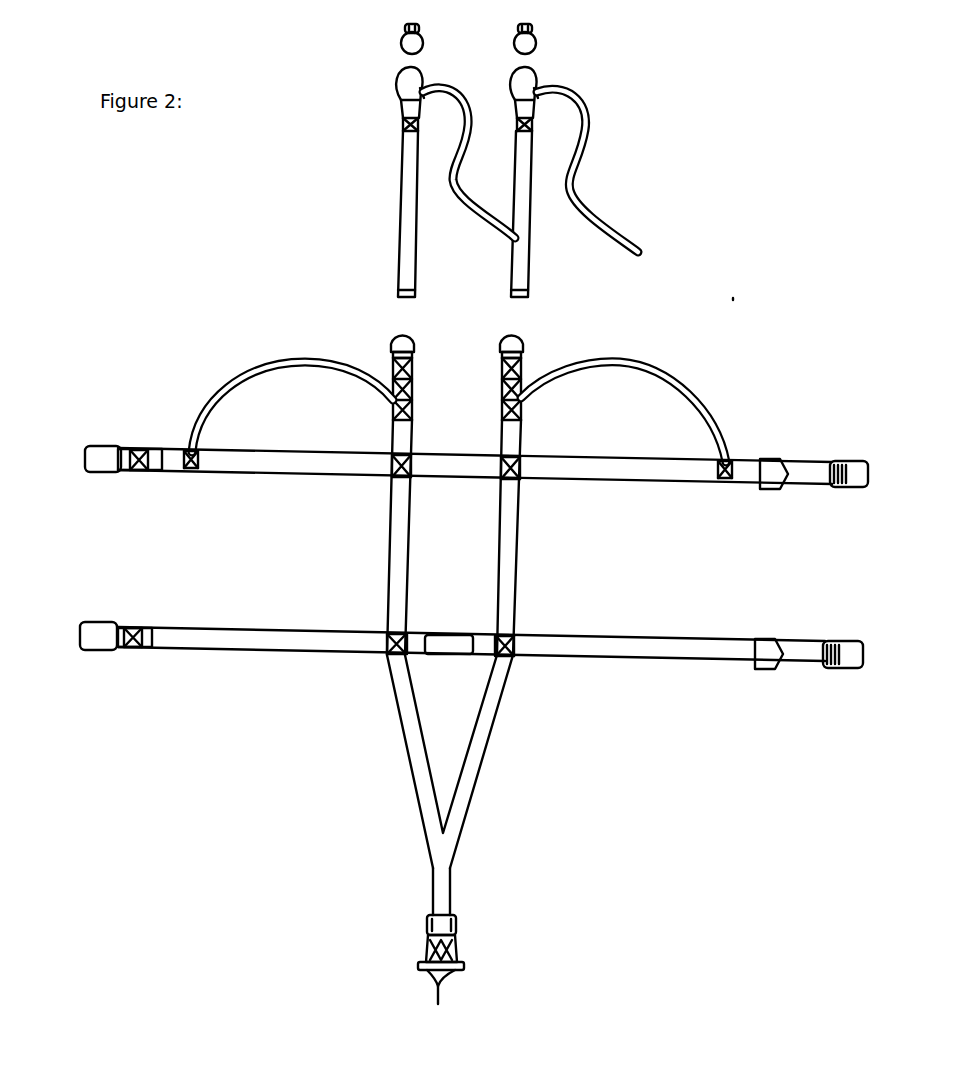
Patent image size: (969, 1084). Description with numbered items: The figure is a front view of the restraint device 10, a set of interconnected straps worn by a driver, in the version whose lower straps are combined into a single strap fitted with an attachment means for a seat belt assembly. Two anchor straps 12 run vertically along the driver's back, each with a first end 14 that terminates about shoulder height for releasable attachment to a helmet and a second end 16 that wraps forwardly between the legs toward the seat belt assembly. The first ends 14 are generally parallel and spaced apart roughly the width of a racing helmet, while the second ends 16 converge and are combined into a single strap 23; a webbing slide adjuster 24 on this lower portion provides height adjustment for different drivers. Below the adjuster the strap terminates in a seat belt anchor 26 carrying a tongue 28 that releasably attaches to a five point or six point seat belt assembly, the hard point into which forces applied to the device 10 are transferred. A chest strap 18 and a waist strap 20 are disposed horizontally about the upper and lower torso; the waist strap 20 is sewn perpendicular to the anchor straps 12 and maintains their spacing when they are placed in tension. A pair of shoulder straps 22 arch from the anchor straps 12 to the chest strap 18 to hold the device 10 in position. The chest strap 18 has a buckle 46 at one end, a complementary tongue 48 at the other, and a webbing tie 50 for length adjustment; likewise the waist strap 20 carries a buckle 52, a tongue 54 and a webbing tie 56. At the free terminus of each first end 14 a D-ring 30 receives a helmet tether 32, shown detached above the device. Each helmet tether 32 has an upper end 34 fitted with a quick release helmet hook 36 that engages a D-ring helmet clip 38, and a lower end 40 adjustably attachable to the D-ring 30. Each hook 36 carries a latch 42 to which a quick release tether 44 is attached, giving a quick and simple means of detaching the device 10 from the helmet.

The restraint device 10 is at (733, 298).
The anchor straps 12 is at (385, 539).
The first end 14 is at (391, 440).
The second end 16 is at (404, 746).
The chest strap 18 is at (597, 480).
The waist strap 20 is at (533, 661).
The shoulder straps 22 is at (300, 357).
The single strap 23 is at (430, 890).
The webbing slide adjuster 24 is at (456, 920).
The seat belt anchor 26 is at (462, 964).
The tongue 28 is at (441, 993).
The D-ring 30 is at (392, 340).
The helmet tether 32 is at (400, 174).
The upper end 34 is at (402, 124).
The quick release helmet hook 36 is at (396, 80).
The D-ring helmet clip 38 is at (401, 32).
The lower end 40 is at (398, 274).
The latch 42 is at (422, 96).
The quick release tether 44 is at (466, 200).
The buckle 46 is at (852, 488).
The tongue 48 is at (106, 472).
The webbing tie 50 is at (764, 487).
The buckle 52 is at (828, 672).
The tongue 54 is at (95, 652).
The webbing tie 56 is at (764, 640).